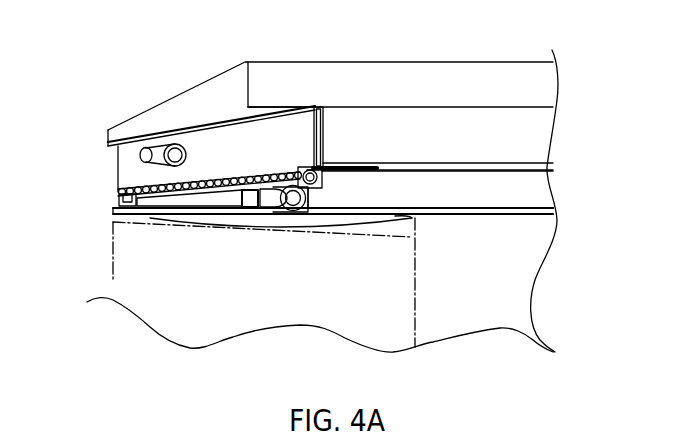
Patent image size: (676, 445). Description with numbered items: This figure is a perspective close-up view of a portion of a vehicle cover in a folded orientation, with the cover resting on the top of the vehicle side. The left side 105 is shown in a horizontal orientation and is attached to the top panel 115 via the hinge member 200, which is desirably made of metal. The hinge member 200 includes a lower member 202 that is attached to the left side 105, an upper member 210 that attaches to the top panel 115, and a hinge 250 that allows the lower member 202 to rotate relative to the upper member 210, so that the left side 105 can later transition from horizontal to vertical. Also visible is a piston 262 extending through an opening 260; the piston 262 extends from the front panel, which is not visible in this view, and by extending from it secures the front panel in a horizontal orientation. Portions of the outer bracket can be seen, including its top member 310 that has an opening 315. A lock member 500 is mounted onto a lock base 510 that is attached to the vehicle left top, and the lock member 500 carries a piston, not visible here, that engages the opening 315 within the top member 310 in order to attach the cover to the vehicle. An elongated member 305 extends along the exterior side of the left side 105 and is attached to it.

The left side 105 is at (547, 192).
The top panel 115 is at (310, 82).
The hinge member 200 is at (92, 218).
The lower member 202 is at (362, 167).
The upper member 210 is at (322, 137).
The hinge 250 is at (228, 178).
The opening 260 is at (106, 105).
The piston 262 is at (140, 153).
The elongated member 305 is at (418, 213).
The top member 310 is at (273, 208).
The opening 315 is at (293, 200).
The lock member 500 is at (222, 228).
The lock base 510 is at (230, 197).